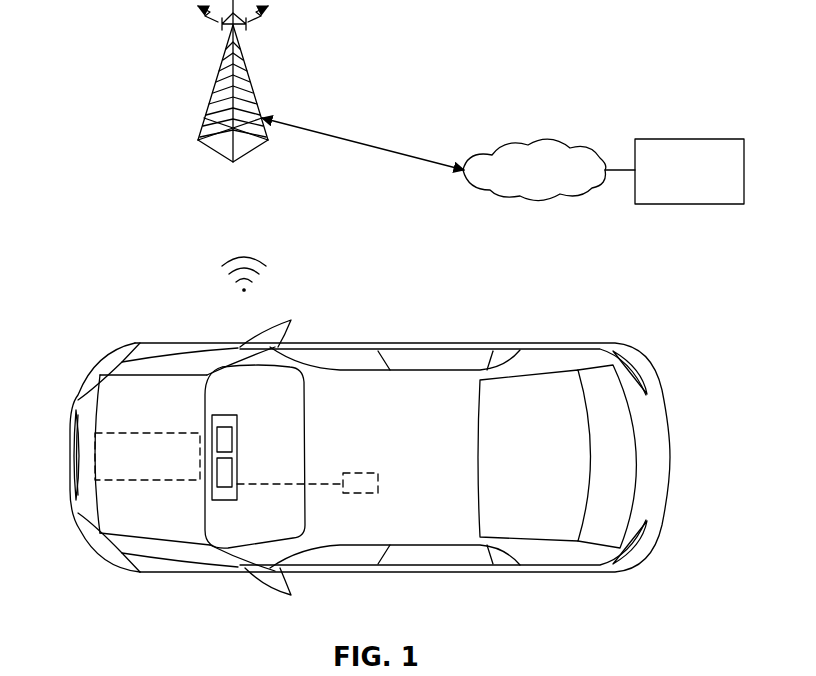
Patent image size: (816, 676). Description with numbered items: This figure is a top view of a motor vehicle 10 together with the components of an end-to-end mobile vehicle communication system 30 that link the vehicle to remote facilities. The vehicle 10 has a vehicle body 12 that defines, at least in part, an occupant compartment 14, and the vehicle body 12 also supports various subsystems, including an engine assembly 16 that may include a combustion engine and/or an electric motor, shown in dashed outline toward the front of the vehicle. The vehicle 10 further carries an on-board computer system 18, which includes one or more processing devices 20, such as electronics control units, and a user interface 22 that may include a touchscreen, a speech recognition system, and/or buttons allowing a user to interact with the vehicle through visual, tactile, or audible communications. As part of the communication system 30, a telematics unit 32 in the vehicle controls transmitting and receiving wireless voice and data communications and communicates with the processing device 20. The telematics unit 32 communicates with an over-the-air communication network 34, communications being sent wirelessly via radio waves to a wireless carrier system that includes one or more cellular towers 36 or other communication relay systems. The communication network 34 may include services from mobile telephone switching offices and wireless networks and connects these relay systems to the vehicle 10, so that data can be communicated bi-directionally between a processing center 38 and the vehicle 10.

The motor vehicle 10 is at (132, 338).
The vehicle body 12 is at (381, 342).
The occupant compartment 14 is at (417, 518).
The engine assembly 16 is at (150, 433).
The on-board computer system 18 is at (228, 390).
The processing device 20 is at (232, 437).
The user interface 22 is at (232, 470).
The end-to-end mobile vehicle communication system 30 is at (420, 71).
The telematics unit 32 is at (378, 480).
The over-the-air communication network 34 is at (537, 142).
The cellular tower 36 is at (220, 75).
The processing center 38 is at (690, 139).